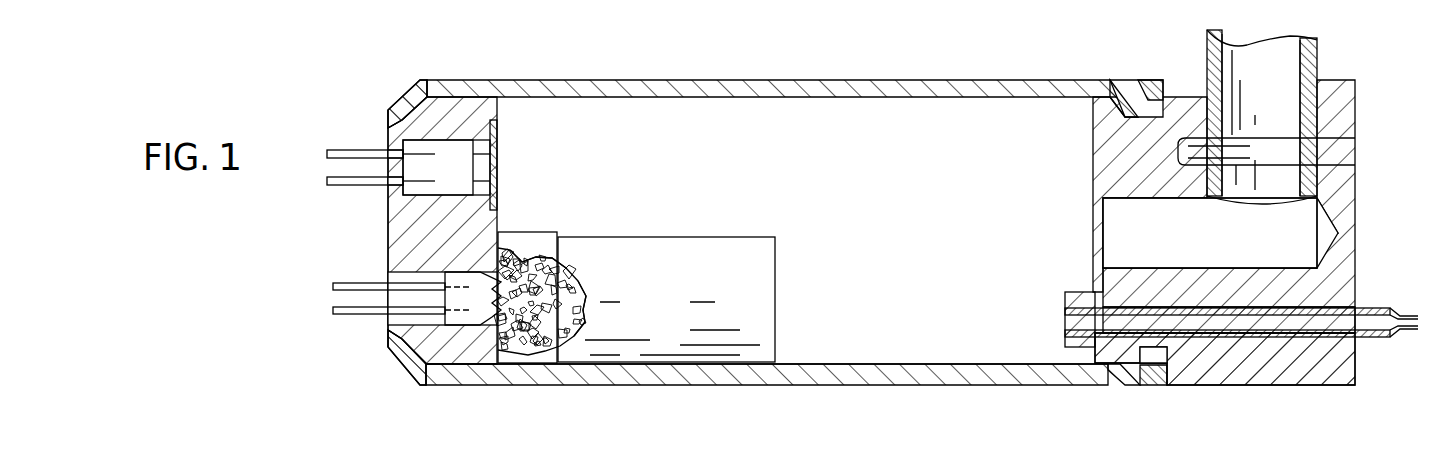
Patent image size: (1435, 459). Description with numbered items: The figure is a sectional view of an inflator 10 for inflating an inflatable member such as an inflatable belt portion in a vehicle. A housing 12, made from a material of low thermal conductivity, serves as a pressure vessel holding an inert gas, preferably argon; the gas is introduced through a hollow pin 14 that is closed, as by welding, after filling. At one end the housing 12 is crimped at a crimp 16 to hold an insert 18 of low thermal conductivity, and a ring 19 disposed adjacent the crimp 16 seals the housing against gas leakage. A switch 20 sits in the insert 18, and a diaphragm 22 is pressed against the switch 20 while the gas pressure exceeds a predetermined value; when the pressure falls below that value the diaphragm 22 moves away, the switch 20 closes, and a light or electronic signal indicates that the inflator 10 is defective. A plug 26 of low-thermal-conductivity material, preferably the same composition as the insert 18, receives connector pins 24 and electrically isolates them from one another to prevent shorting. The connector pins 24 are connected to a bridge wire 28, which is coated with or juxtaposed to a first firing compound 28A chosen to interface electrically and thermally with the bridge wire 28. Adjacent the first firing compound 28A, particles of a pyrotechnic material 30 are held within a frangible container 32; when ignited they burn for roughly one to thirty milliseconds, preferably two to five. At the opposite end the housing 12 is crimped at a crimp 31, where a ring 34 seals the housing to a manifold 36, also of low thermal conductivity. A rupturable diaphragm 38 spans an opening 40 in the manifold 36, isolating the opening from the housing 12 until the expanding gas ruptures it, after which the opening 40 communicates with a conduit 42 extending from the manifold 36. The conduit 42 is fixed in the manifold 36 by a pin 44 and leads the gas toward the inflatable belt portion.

The inflator 10 is at (830, 68).
The housing 12 is at (640, 80).
The hollow pin 14 is at (1376, 338).
The crimp 16 is at (408, 376).
The insert 18 is at (463, 345).
The ring 19 is at (388, 120).
The switch 20 is at (450, 163).
The diaphragm 22 is at (497, 198).
The connector pins 24 is at (333, 310).
The plug 26 is at (460, 298).
The bridge wire 28 is at (518, 305).
The first firing compound 28A is at (584, 311).
The pyrotechnic material 30 is at (517, 297).
The crimp 31 is at (1132, 88).
The frangible container 32 is at (762, 266).
The ring 34 is at (1152, 80).
The manifold 36 is at (1311, 375).
The rupturable diaphragm 38 is at (1097, 232).
The opening 40 is at (1104, 202).
The conduit 42 is at (1317, 58).
The pin 44 is at (1342, 146).